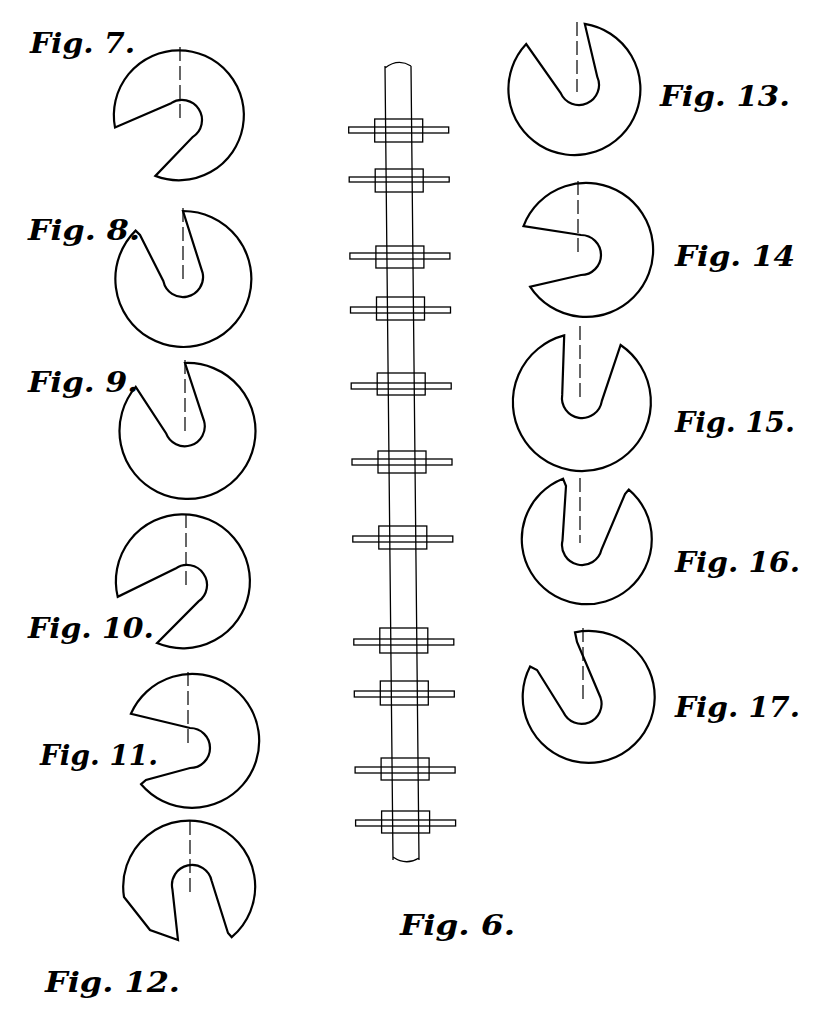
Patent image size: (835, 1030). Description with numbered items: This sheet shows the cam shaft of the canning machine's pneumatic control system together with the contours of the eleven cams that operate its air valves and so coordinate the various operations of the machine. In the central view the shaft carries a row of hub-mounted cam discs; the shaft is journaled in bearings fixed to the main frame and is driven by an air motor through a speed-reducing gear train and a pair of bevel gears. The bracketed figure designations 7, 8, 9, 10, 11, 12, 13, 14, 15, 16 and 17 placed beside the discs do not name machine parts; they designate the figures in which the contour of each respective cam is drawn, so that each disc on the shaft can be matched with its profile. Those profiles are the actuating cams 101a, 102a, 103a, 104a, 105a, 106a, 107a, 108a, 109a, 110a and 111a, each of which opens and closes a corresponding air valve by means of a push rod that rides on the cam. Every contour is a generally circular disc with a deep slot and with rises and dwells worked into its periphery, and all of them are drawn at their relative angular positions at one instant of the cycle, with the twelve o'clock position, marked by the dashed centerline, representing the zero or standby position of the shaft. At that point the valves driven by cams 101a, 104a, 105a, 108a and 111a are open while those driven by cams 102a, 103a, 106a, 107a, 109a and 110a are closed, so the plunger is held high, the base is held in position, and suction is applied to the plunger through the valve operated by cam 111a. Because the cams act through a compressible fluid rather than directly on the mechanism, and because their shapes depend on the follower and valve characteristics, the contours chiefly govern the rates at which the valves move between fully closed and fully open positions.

In FIG. 6, the figure designation 7 is at (456, 118).
In FIG. 6, the figure designation 8 is at (457, 168).
In FIG. 6, the figure designation 9 is at (457, 244).
In FIG. 6, the figure designation 10 is at (458, 298).
In FIG. 6, the figure designation 11 is at (459, 374).
In FIG. 6, the figure designation 12 is at (460, 450).
In FIG. 6, the figure designation 13 is at (461, 527).
In FIG. 6, the figure designation 14 is at (462, 630).
In FIG. 6, the figure designation 15 is at (463, 682).
In FIG. 6, the figure designation 16 is at (463, 758).
In FIG. 6, the figure designation 17 is at (464, 811).
In FIG. 7, the actuating cam 101a is at (238, 97).
In FIG. 8, the actuating cam 102a is at (242, 245).
In FIG. 9, the actuating cam 103a is at (250, 400).
In FIG. 10, the actuating cam 104a is at (243, 560).
In FIG. 11, the actuating cam 105a is at (252, 710).
In FIG. 12, the actuating cam 106a is at (266, 846).
In FIG. 13, the actuating cam 107a is at (637, 63).
In FIG. 14, the actuating cam 108a is at (645, 225).
In FIG. 15, the actuating cam 109a is at (650, 382).
In FIG. 16, the actuating cam 110a is at (650, 532).
In FIG. 17, the actuating cam 111a is at (652, 673).